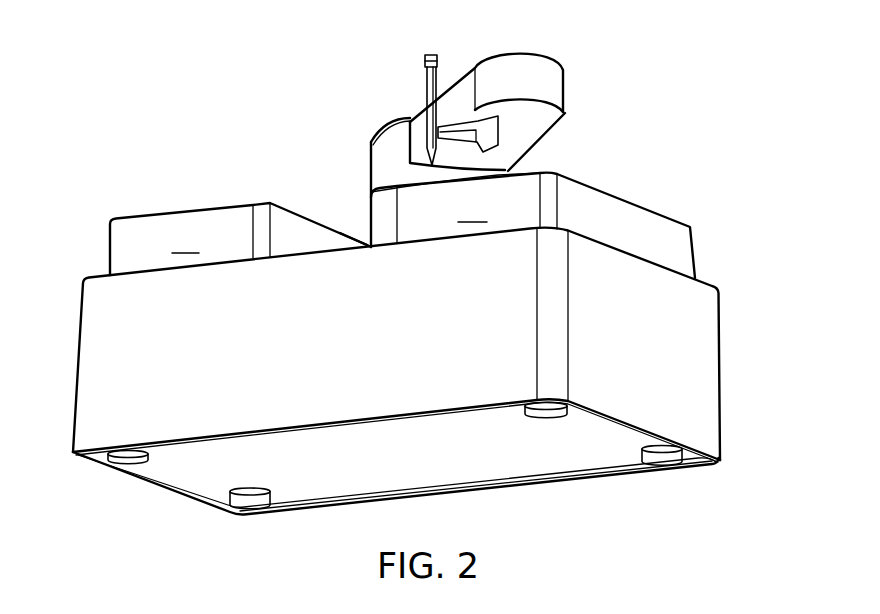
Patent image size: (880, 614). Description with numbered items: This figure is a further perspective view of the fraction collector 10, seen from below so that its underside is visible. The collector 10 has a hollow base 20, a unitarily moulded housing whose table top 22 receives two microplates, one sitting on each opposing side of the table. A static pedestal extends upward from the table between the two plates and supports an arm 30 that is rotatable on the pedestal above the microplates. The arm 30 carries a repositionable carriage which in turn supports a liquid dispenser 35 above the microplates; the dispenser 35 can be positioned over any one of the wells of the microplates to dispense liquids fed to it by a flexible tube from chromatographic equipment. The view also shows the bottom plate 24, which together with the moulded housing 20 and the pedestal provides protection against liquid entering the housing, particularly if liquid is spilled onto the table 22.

The fraction collector 10 is at (128, 79).
The hollow base 20 is at (102, 353).
The table top 22 is at (360, 246).
The bottom plate 24 is at (523, 455).
The arm 30 is at (550, 90).
The liquid dispenser 35 is at (436, 75).